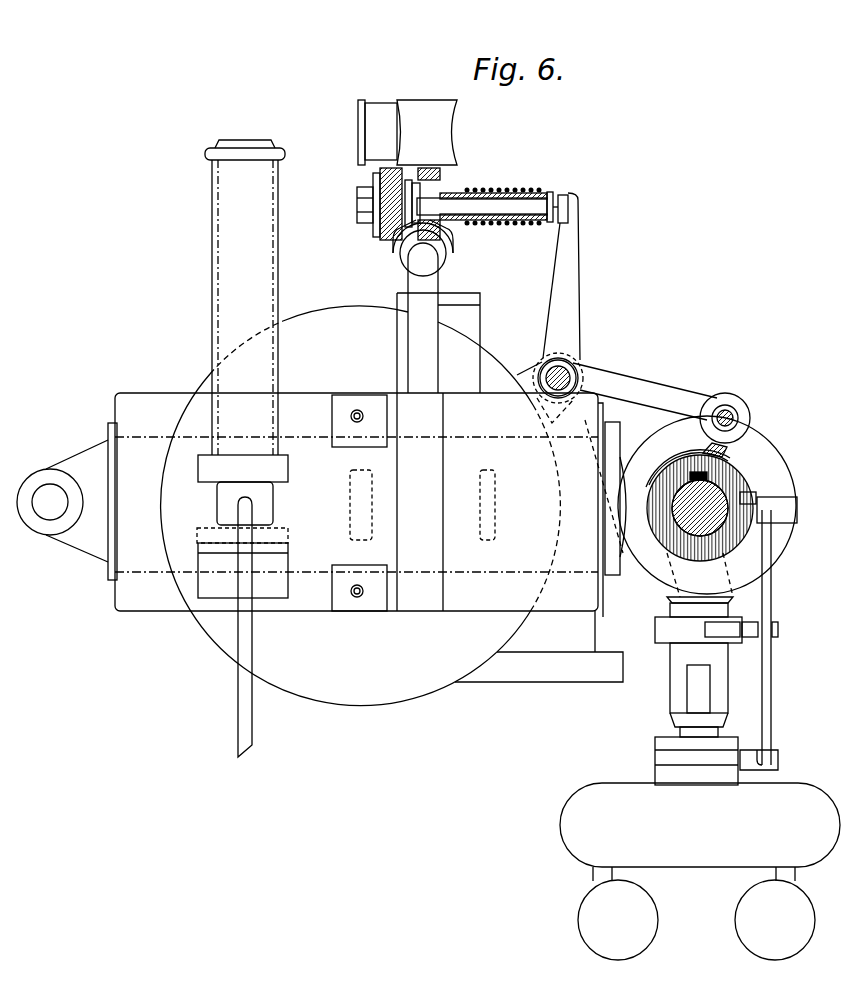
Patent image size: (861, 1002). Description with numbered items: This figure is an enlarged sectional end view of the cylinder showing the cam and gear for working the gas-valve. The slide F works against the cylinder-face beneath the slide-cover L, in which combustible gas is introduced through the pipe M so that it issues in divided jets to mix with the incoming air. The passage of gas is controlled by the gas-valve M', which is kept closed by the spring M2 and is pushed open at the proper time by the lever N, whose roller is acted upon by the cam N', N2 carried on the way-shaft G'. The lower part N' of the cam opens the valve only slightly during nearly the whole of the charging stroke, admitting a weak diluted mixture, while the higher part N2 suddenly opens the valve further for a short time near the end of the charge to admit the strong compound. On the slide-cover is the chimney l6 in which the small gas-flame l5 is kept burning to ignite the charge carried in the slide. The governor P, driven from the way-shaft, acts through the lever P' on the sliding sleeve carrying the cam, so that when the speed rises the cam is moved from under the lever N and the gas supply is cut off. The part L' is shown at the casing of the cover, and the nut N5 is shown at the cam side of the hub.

The gas-valve M' is at (407, 176).
The spring M2 is at (487, 199).
The gas pipe M is at (361, 468).
The lever N is at (633, 318).
The lower cam part N' is at (688, 462).
The higher cam part N2 is at (725, 453).
The adjusting nut N5 is at (768, 503).
The way-shaft G' is at (707, 516).
The casing section L' is at (387, 452).
The slide-cover L is at (370, 537).
The slide F is at (67, 501).
The chimney l6 is at (243, 332).
The gas-flame l5 is at (242, 627).
The lever P' is at (764, 640).
The governor P is at (700, 788).